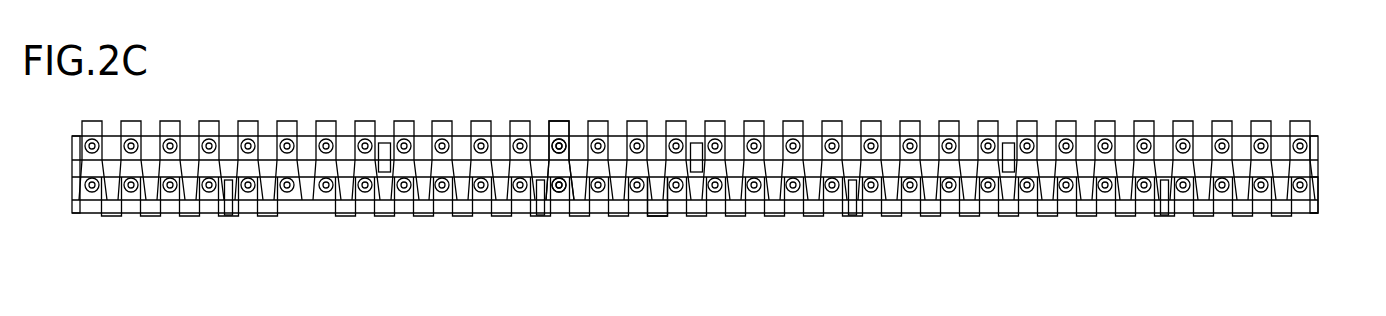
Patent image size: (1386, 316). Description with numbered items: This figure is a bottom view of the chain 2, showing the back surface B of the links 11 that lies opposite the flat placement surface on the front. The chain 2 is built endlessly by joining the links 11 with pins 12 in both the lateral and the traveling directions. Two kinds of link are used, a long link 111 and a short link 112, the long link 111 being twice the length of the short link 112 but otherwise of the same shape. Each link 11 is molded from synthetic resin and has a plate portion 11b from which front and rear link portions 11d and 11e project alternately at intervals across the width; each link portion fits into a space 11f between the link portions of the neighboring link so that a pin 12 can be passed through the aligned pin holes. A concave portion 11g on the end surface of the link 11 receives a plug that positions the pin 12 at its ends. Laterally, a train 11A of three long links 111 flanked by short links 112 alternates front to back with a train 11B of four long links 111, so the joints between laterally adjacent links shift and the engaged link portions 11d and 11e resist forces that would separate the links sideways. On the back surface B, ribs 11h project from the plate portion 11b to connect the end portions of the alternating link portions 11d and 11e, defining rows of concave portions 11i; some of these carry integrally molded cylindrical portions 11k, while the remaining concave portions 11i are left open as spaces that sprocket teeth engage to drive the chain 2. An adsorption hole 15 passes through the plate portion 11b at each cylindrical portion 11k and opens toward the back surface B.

The chain 2 is at (818, 67).
The link 11 is at (198, 312).
The long link 111 is at (244, 107).
The short link 112 is at (143, 228).
The pin 12 is at (98, 215).
The adsorption hole 15 is at (325, 117).
The cylindrical portion 11k is at (423, 137).
The concave portion 11i is at (458, 137).
The rib 11h is at (598, 137).
The plate portion 11b is at (822, 215).
The link portion 11d is at (1122, 215).
The link portion 11e is at (1098, 133).
The space 11f is at (967, 130).
The concave portion 11g is at (72, 183).
The train 11A is at (1323, 182).
The train 11B is at (1323, 137).
The back surface B is at (655, 137).